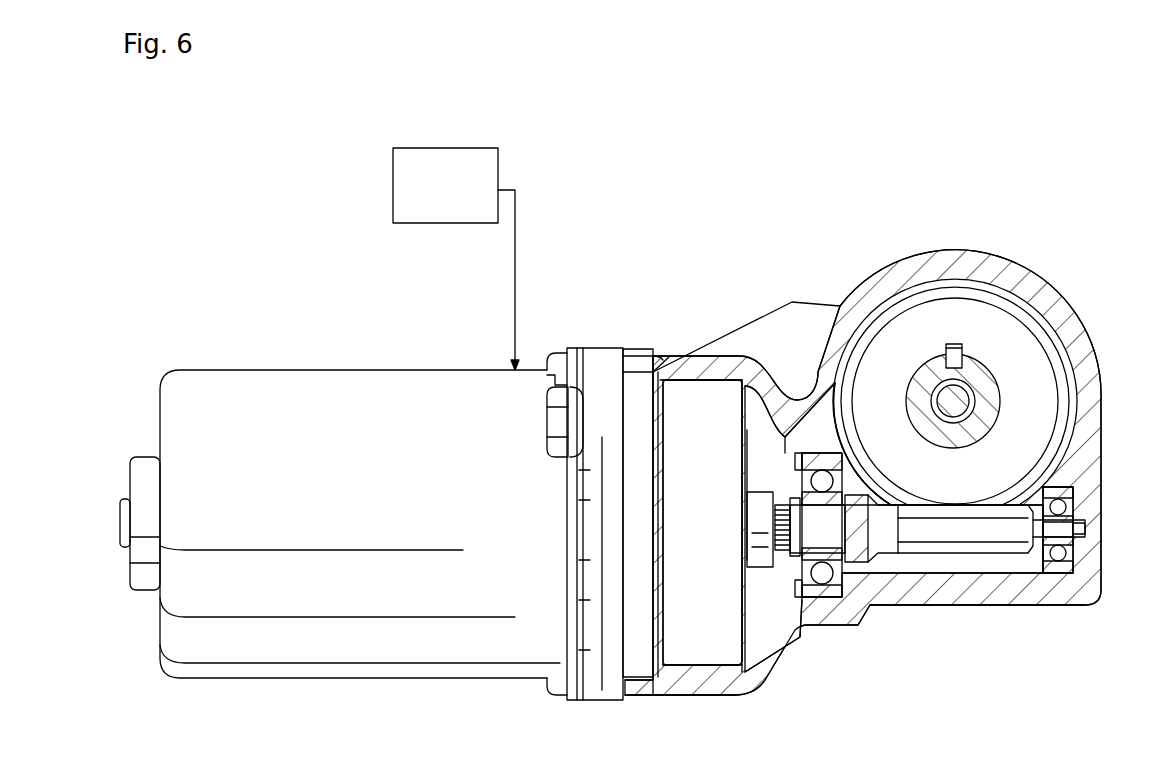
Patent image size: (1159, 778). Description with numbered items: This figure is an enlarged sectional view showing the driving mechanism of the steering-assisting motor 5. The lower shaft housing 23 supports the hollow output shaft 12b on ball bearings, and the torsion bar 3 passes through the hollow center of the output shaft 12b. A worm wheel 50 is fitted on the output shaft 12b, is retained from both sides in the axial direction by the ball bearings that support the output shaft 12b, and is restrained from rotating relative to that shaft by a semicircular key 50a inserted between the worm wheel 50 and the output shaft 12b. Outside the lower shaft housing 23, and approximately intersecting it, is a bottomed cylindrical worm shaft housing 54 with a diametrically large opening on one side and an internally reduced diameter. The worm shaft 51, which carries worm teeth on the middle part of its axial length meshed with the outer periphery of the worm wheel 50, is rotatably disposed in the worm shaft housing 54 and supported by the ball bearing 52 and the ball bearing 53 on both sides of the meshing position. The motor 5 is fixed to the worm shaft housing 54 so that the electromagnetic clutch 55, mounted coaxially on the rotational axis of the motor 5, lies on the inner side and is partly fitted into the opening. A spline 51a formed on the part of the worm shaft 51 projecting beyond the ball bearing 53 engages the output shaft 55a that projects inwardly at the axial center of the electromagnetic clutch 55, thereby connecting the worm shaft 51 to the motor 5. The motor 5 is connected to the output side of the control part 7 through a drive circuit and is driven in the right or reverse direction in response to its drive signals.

The torsion bar 3 is at (962, 400).
The steering-assisting motor 5 is at (401, 380).
The control part 7 is at (452, 197).
The output shaft 12b is at (920, 377).
The lower shaft housing 23 is at (1080, 345).
The worm wheel 50 is at (1018, 330).
The semicircular key 50a is at (953, 344).
The worm shaft 51 is at (958, 548).
The spline 51a is at (785, 570).
The ball bearing 52 is at (1068, 505).
The ball bearing 53 is at (822, 585).
The worm shaft housing 54 is at (1042, 600).
The electromagnetic clutch 55 is at (697, 390).
The output shaft of electromagnetic clutch 55a is at (758, 503).